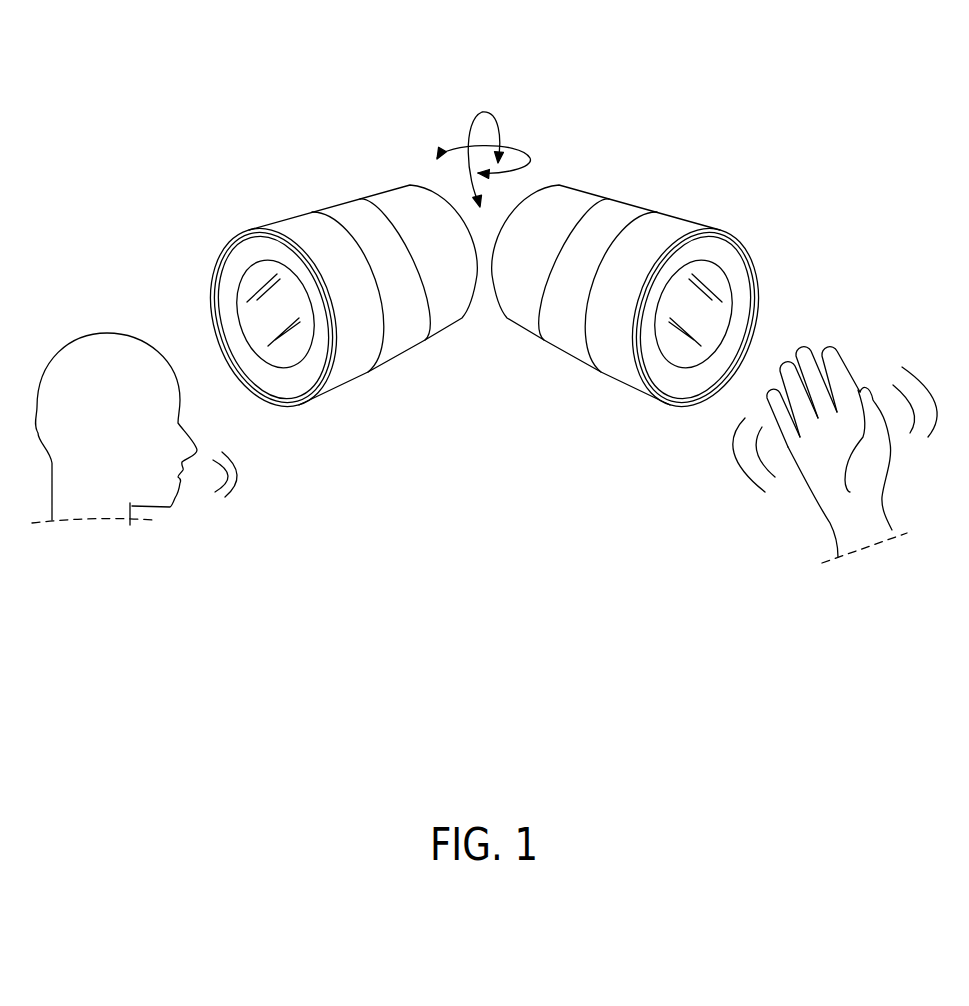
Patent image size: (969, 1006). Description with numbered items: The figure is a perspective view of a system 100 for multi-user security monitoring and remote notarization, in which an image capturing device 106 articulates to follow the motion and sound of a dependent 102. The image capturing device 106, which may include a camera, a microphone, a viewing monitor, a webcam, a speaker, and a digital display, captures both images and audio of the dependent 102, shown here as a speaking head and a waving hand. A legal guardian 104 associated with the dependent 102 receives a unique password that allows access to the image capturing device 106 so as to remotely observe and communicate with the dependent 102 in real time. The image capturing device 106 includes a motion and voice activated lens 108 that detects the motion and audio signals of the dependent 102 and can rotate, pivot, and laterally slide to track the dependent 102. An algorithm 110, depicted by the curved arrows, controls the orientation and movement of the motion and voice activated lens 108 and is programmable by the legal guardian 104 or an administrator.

The system 100 is at (152, 57).
The dependent 102 is at (827, 343).
The legal guardian 104 is at (78, 340).
The image capturing device 106 is at (330, 208).
The motion and voice activated lens 108 is at (720, 308).
The algorithm 110 is at (468, 128).